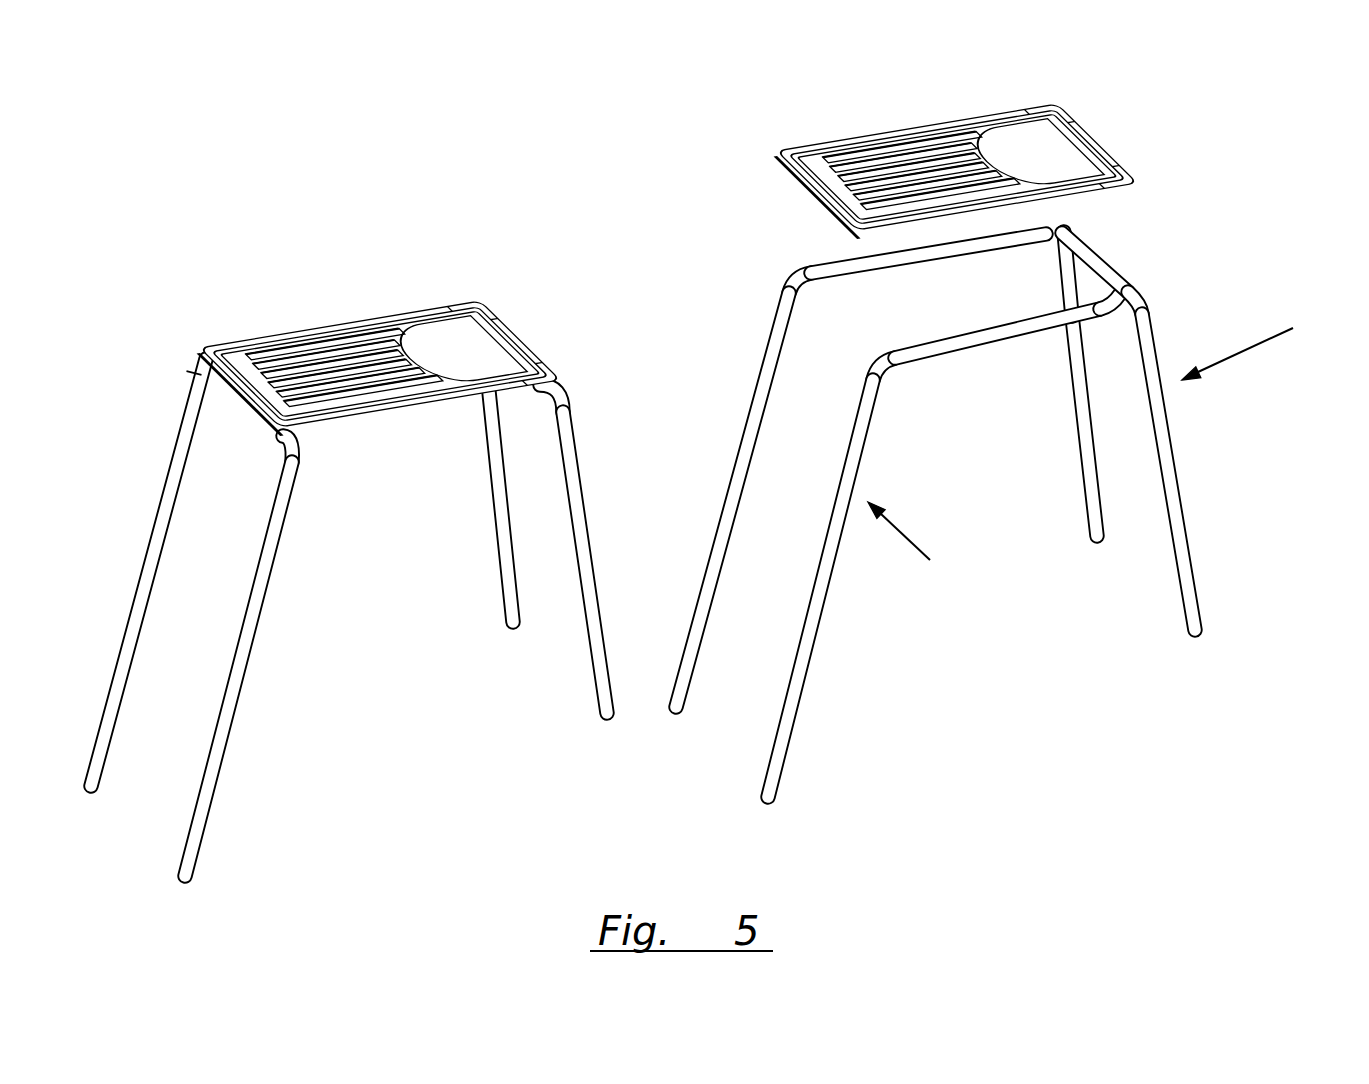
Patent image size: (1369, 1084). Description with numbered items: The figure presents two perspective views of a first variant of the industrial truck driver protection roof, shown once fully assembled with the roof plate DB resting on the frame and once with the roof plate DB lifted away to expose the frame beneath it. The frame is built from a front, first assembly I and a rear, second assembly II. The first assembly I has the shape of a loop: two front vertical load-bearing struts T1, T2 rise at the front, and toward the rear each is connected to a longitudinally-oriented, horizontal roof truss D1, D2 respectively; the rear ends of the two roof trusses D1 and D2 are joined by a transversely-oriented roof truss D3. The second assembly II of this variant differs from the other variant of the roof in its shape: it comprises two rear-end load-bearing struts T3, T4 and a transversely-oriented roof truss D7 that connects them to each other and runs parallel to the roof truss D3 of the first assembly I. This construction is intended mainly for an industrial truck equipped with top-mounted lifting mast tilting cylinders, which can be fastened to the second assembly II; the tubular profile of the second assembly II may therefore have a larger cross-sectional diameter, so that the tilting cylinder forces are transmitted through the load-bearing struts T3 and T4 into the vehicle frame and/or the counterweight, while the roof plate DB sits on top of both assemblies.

The roof plate DB is at (322, 355).
The front vertical load-bearing strut T1 is at (163, 519).
The front vertical load-bearing strut T2 is at (237, 657).
The rear-end load-bearing strut T3 is at (490, 468).
The rear-end load-bearing strut T4 is at (575, 512).
The longitudinally-oriented horizontal roof truss D1 is at (882, 262).
The longitudinally-oriented horizontal roof truss D2 is at (1001, 342).
The transversely-oriented roof truss D3 is at (1074, 263).
The transversely-oriented roof truss D7 is at (1100, 271).
The first assembly I is at (955, 569).
The second assembly II is at (1306, 336).